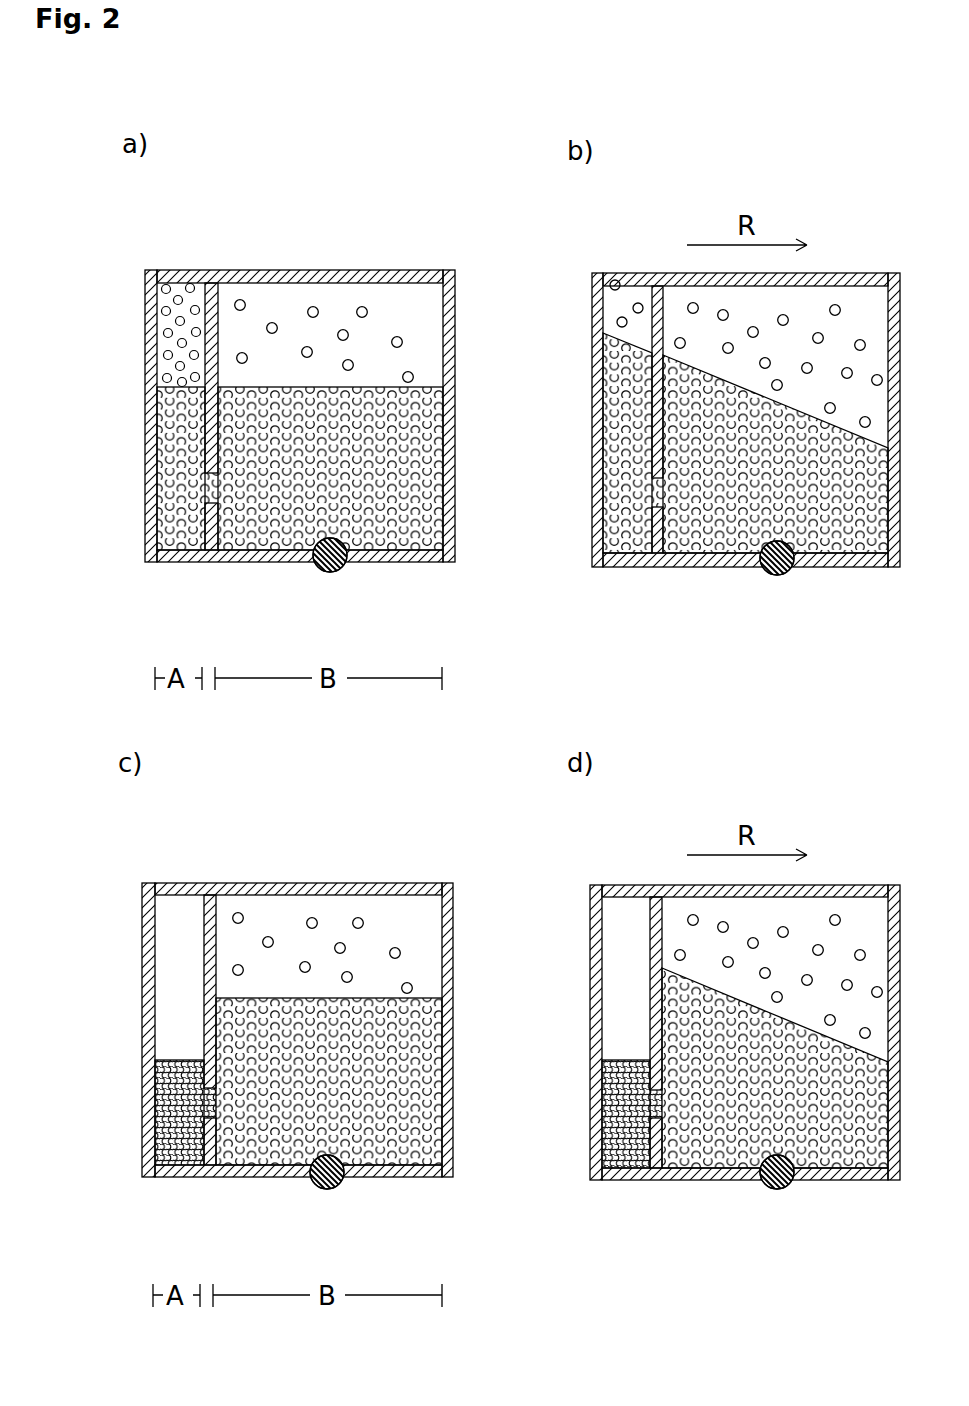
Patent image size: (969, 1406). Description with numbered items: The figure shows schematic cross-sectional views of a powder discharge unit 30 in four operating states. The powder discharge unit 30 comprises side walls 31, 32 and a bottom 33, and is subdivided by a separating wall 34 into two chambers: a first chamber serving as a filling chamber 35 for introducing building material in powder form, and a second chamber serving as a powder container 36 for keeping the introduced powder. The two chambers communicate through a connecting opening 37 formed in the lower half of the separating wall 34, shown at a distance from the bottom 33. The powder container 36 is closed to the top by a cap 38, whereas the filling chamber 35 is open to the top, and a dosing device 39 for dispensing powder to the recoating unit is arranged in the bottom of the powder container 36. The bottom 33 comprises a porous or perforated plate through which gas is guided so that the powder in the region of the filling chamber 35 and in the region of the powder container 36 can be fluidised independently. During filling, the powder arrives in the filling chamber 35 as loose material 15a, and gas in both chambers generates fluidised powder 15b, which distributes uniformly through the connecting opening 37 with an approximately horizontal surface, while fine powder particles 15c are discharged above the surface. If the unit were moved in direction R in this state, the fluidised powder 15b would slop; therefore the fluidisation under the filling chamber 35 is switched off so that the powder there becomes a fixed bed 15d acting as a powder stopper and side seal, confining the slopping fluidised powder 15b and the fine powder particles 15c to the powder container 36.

The powder discharge unit 30 is at (326, 260).
The side wall 31 is at (157, 423).
The side wall 32 is at (448, 425).
The bottom 33 is at (395, 560).
The separating wall 34 is at (207, 327).
The filling chamber 35 is at (178, 277).
The powder container 36 is at (247, 293).
The connecting opening 37 is at (235, 545).
The cap 38 is at (372, 268).
The dosing device 39 is at (323, 570).
The loose material 15a is at (160, 320).
The fluidised powder 15b is at (173, 460).
The fine powder particles 15c is at (398, 342).
The fixed bed 15d is at (153, 1063).